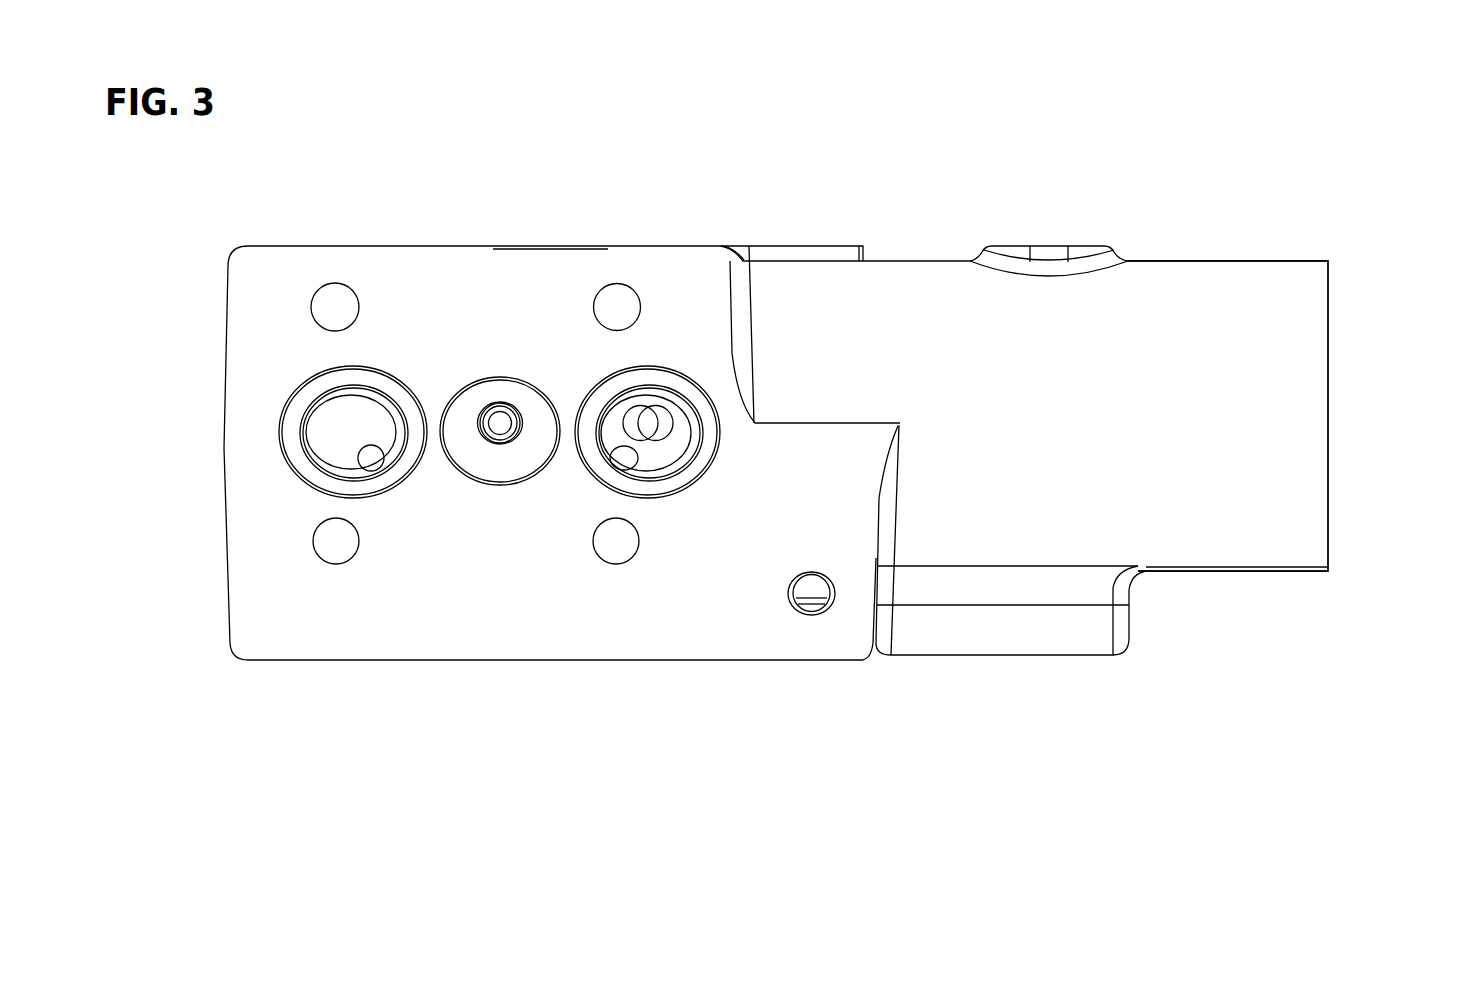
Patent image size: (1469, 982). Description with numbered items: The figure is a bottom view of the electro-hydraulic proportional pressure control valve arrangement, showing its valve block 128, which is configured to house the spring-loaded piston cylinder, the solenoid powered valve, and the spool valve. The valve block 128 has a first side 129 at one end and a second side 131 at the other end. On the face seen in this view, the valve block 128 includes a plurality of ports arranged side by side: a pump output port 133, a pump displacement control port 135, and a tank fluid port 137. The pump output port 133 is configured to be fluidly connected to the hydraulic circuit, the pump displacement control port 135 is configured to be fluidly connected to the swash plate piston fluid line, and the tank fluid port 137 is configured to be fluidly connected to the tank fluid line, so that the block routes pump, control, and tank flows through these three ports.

The valve block 128 is at (1205, 297).
The first side 129 is at (203, 236).
The second side 131 is at (1363, 232).
The pump output port 133 is at (300, 480).
The pump displacement control port 135 is at (498, 478).
The tank fluid port 137 is at (602, 483).